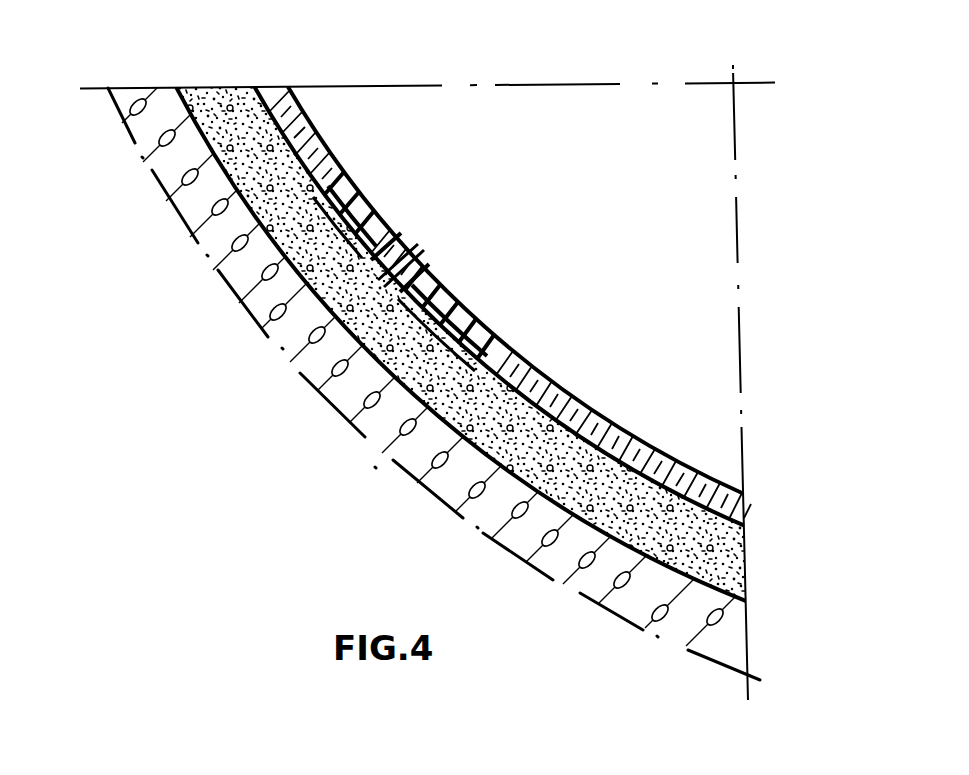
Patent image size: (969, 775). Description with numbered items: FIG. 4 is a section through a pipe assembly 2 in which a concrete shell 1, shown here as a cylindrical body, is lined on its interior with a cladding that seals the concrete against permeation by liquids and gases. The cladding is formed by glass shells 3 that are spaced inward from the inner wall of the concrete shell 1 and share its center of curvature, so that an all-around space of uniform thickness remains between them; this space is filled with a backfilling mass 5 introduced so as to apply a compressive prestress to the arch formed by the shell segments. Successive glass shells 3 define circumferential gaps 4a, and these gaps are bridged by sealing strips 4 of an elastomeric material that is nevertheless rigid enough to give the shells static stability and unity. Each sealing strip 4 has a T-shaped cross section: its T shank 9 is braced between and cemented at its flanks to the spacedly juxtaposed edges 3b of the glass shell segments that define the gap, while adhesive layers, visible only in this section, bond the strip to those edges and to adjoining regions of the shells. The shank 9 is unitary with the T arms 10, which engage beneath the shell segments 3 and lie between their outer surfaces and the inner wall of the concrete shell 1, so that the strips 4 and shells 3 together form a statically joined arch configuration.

The concrete shell 1 is at (642, 602).
The tunnel lining structure 2 is at (708, 440).
The glass shell 3 is at (335, 215).
The edge of glass shell segment 3b is at (428, 275).
The sealing strip 4 is at (403, 383).
The circumferential gap 4a is at (463, 328).
The backfilling mass 5 is at (720, 560).
The T shank 9 is at (407, 265).
The T arms 10 is at (322, 228).